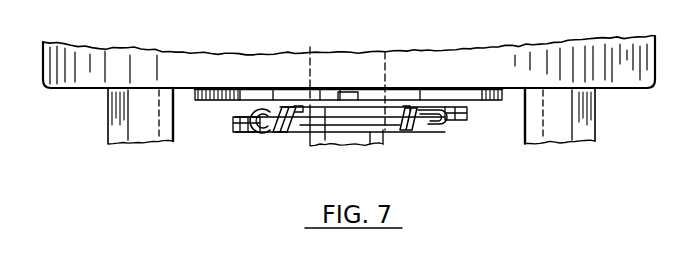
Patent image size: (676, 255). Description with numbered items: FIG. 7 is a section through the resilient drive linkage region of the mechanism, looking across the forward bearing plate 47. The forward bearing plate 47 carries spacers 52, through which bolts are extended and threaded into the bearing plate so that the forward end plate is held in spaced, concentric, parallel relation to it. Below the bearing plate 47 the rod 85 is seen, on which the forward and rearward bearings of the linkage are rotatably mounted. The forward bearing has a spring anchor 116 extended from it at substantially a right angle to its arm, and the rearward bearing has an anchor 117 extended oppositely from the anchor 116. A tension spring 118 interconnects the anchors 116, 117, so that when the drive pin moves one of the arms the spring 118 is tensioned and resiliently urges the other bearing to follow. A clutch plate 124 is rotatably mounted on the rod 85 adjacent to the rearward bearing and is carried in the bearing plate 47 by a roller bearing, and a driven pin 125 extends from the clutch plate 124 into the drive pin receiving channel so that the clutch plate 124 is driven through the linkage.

The forward bearing plate 47 is at (462, 80).
The spacers 52 is at (122, 133).
The rod 85 is at (308, 68).
The spring anchor 116 is at (236, 124).
The anchor 117 is at (452, 121).
The tension spring 118 is at (275, 130).
The clutch plate 124 is at (470, 98).
The driven pin 125 is at (365, 140).